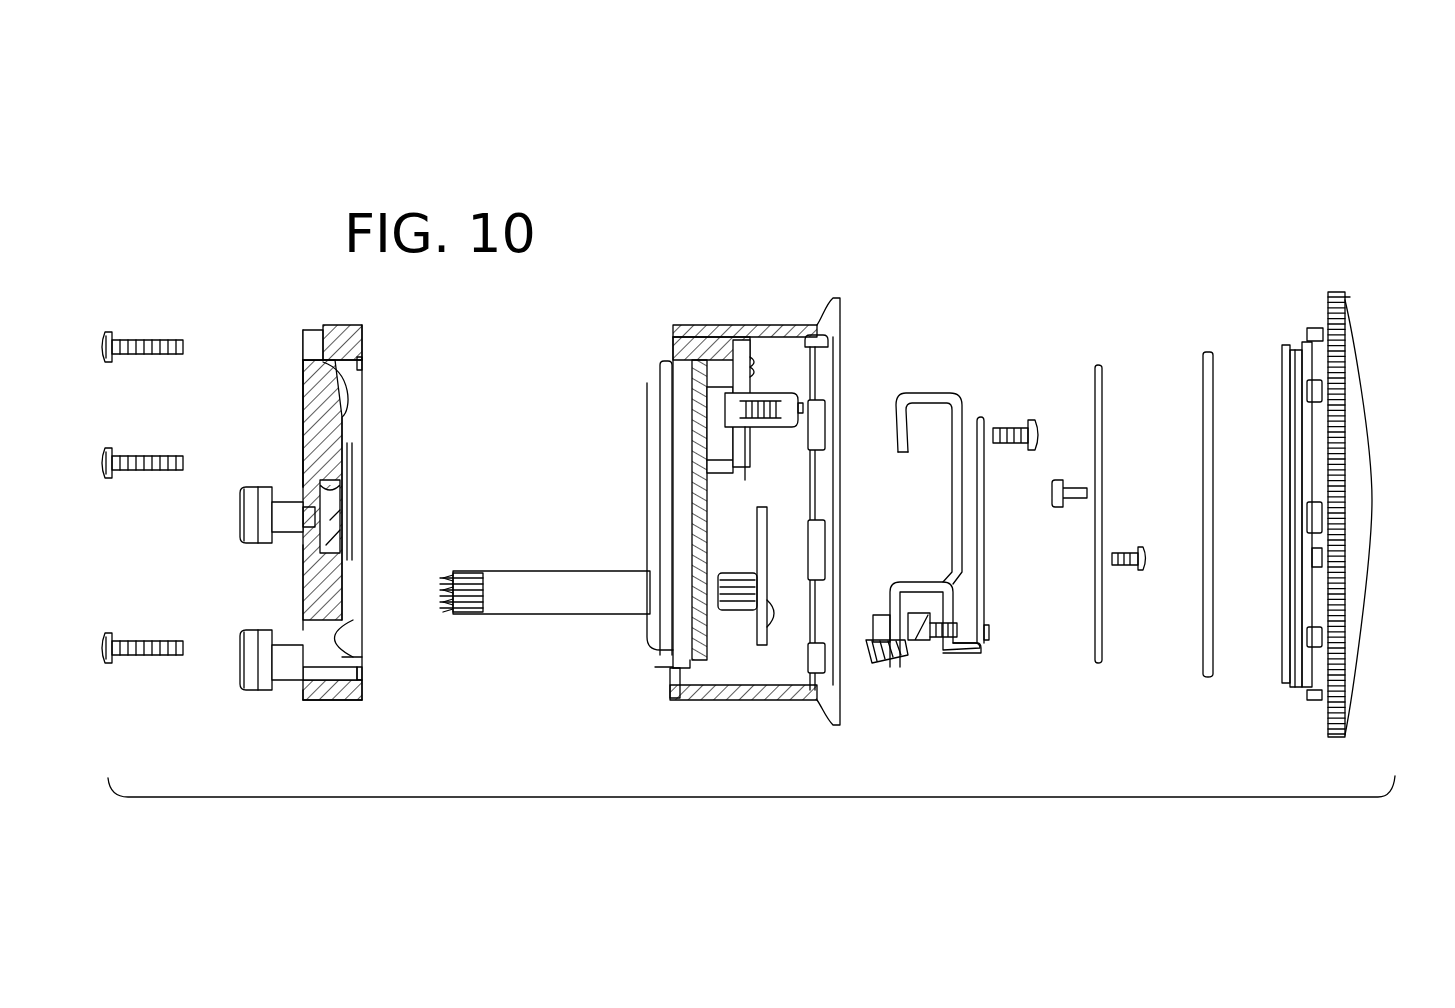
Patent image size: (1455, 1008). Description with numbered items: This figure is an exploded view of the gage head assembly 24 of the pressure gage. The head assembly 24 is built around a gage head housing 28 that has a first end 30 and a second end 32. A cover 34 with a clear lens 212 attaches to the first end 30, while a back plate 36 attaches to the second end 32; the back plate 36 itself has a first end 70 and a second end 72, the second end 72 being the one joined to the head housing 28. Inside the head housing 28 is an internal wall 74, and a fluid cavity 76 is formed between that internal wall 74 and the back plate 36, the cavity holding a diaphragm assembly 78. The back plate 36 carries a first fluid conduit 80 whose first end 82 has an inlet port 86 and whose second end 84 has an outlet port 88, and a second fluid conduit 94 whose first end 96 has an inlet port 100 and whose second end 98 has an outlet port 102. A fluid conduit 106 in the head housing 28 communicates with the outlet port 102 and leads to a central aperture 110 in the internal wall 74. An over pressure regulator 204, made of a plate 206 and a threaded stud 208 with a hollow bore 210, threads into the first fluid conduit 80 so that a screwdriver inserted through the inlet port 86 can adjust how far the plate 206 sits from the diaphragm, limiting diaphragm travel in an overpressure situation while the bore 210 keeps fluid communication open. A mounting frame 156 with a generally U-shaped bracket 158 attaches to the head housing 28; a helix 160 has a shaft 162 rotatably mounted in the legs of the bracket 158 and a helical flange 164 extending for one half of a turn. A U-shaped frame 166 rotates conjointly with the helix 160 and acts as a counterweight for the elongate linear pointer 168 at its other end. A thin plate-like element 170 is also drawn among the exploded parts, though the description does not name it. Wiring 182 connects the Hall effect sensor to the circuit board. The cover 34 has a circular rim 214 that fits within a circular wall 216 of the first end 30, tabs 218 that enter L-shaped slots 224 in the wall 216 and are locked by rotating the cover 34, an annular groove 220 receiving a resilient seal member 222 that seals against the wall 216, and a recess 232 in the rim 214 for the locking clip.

The gage head assembly 24 is at (926, 180).
The gage head housing 28 is at (760, 272).
The first end 30 is at (838, 302).
The second end 32 is at (677, 320).
The cover 34 is at (1337, 292).
The back plate 36 is at (320, 697).
The first end 70 is at (300, 373).
The second end 72 is at (362, 362).
The internal wall 74 is at (705, 565).
The fluid cavity 76 is at (350, 635).
The diaphragm assembly 78 is at (656, 375).
The first fluid conduit 80 is at (278, 545).
The first end 82 is at (245, 545).
The second end 84 is at (350, 541).
The inlet port 86 is at (240, 507).
The outlet port 88 is at (345, 490).
The second fluid conduit 94 is at (275, 692).
The first end 96 is at (245, 692).
The second end 98 is at (360, 697).
The inlet port 100 is at (262, 663).
The outlet port 102 is at (362, 674).
The fluid conduit 106 is at (680, 700).
The central aperture 110 is at (698, 508).
The mounting frame 156 is at (930, 392).
The U-shaped bracket 158 is at (925, 580).
The helix 160 is at (922, 668).
The shaft 162 is at (935, 642).
The helical flange 164 is at (905, 625).
The U-shaped frame 166 is at (962, 652).
The linear pointer 168 is at (986, 528).
The insulating plate 170 is at (1098, 360).
The wiring 182 is at (578, 580).
The over pressure regulator 204 is at (300, 494).
The plate 206 is at (353, 565).
The threaded stud 208 is at (296, 560).
The hollow bore 210 is at (345, 523).
The clear lens 212 is at (1370, 512).
The rim 214 is at (1300, 440).
The circular wall 216 is at (840, 340).
The tabs 218 is at (1316, 328).
The annular groove 220 is at (1287, 345).
The seal member 222 is at (1208, 350).
The L-shaped slots 224 is at (828, 432).
The recess 232 is at (1314, 558).